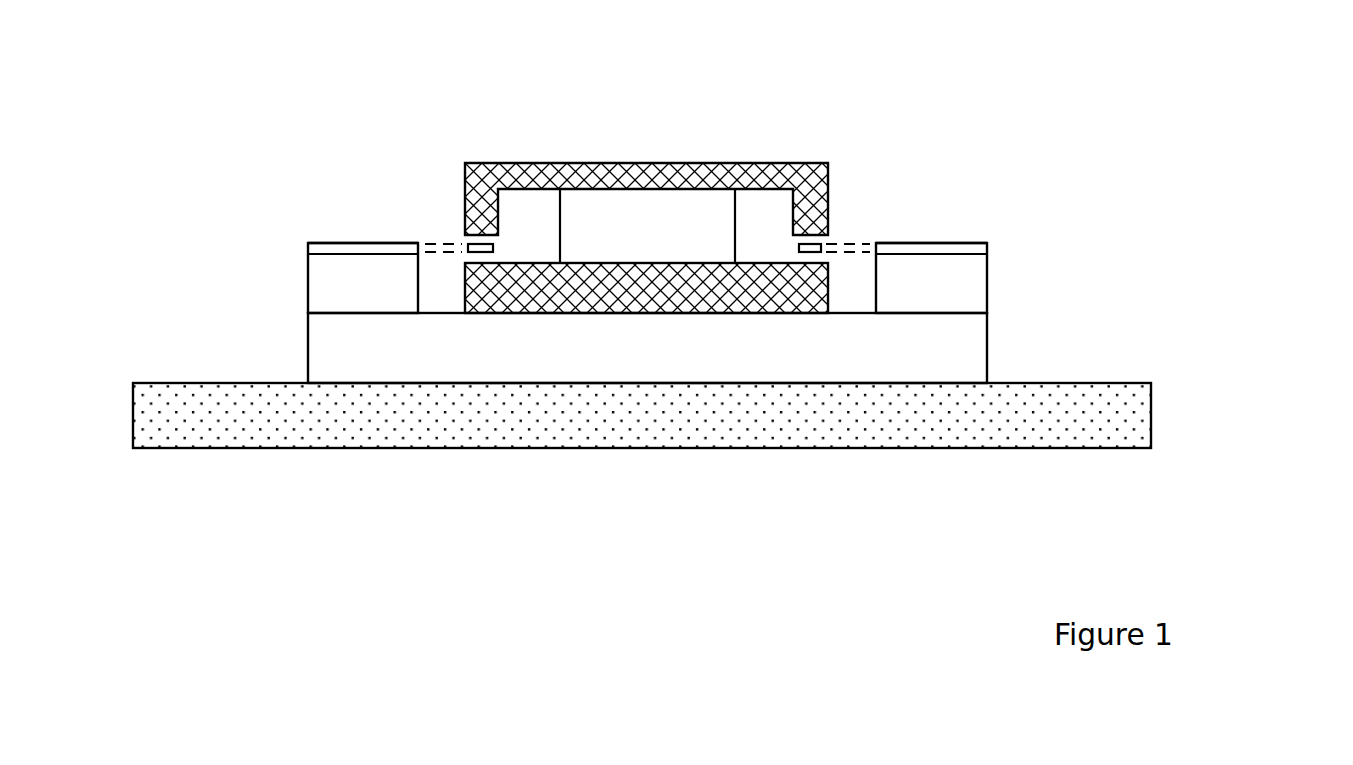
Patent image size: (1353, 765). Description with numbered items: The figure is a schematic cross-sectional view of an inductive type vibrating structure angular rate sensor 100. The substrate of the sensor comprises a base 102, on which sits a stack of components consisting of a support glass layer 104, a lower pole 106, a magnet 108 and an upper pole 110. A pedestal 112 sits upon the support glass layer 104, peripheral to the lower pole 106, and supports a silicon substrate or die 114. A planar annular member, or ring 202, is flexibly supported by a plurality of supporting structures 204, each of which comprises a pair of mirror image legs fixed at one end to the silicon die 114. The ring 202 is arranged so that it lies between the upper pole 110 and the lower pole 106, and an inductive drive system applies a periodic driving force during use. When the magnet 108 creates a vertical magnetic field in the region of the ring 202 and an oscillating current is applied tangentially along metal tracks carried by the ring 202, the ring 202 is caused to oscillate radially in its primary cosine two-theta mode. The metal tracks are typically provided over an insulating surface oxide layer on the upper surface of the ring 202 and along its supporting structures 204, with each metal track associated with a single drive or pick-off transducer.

The inductive type vibrating structure angular rate sensor 100 is at (268, 117).
The base 102 is at (1151, 413).
The support glass layer 104 is at (989, 347).
The lower pole 106 is at (828, 287).
The magnet 108 is at (585, 215).
The upper pole 110 is at (482, 193).
The pedestal 112 is at (989, 283).
The silicon die 114 is at (990, 243).
The planar annular member (ring) 202 is at (808, 242).
The supporting structures 204 is at (855, 243).